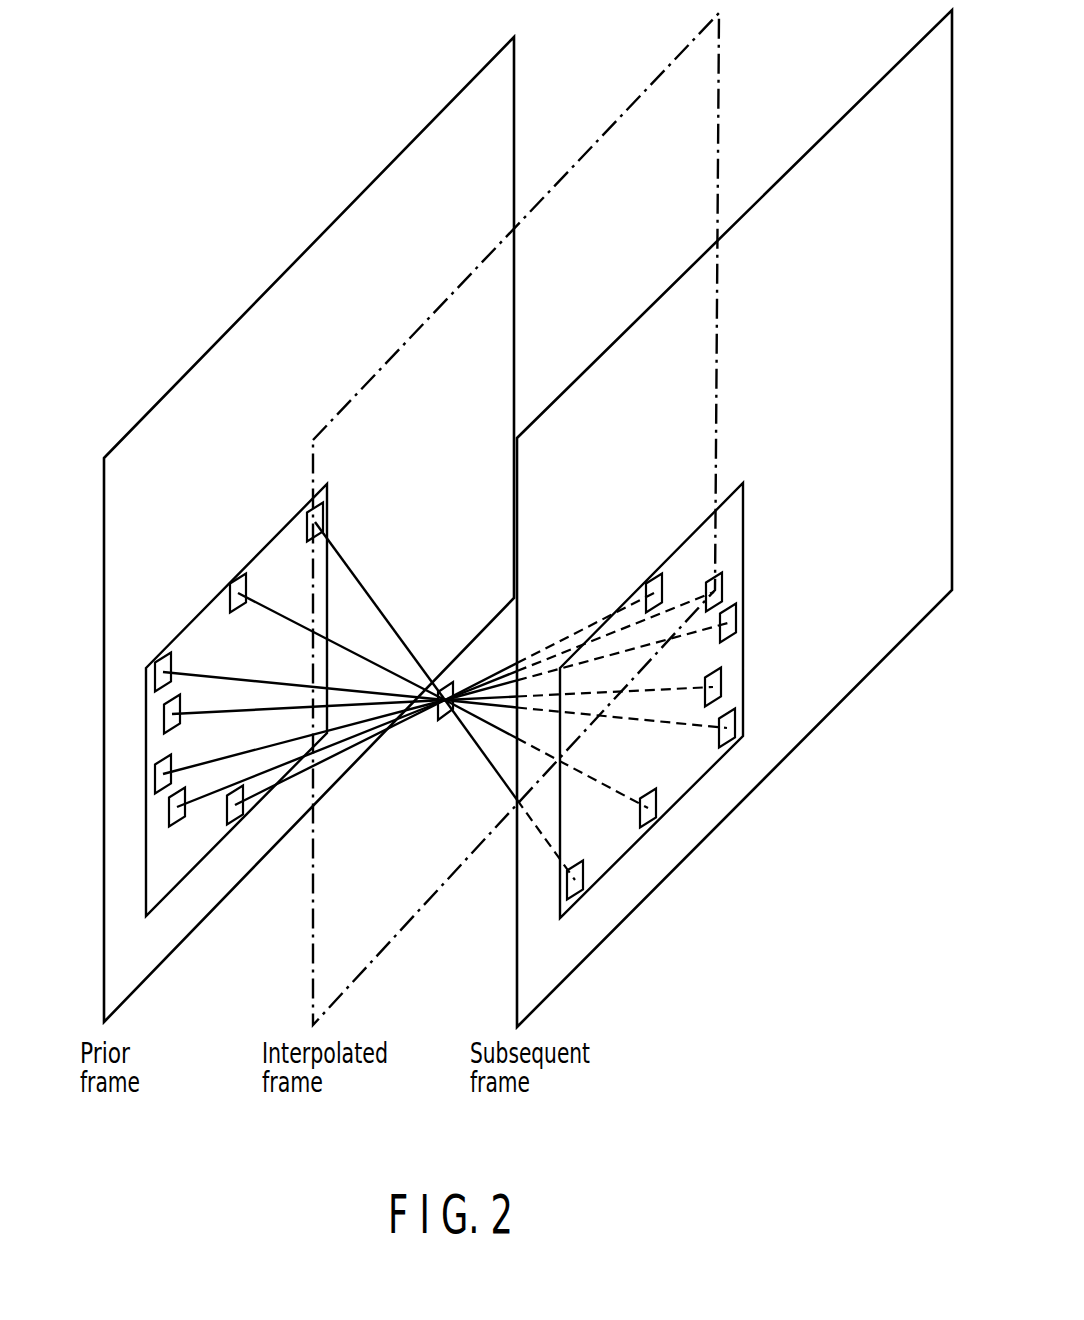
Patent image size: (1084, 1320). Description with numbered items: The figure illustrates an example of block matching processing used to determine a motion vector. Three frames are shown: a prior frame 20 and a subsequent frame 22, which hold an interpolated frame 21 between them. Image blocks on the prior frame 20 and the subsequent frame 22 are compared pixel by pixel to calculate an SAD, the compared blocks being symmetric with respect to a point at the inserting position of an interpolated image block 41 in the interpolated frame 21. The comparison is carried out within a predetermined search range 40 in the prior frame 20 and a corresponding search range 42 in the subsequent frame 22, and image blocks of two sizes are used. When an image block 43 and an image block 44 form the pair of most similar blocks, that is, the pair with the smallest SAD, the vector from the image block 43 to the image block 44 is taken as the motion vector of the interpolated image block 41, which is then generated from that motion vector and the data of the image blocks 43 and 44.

The prior frame 20 is at (104, 937).
The interpolated frame 21 is at (313, 938).
The subsequent frame 22 is at (516, 940).
The search range 40 is at (178, 636).
The interpolated image block 41 is at (452, 683).
The search range 42 is at (745, 550).
The image block 43 is at (245, 576).
The image block 44 is at (640, 815).